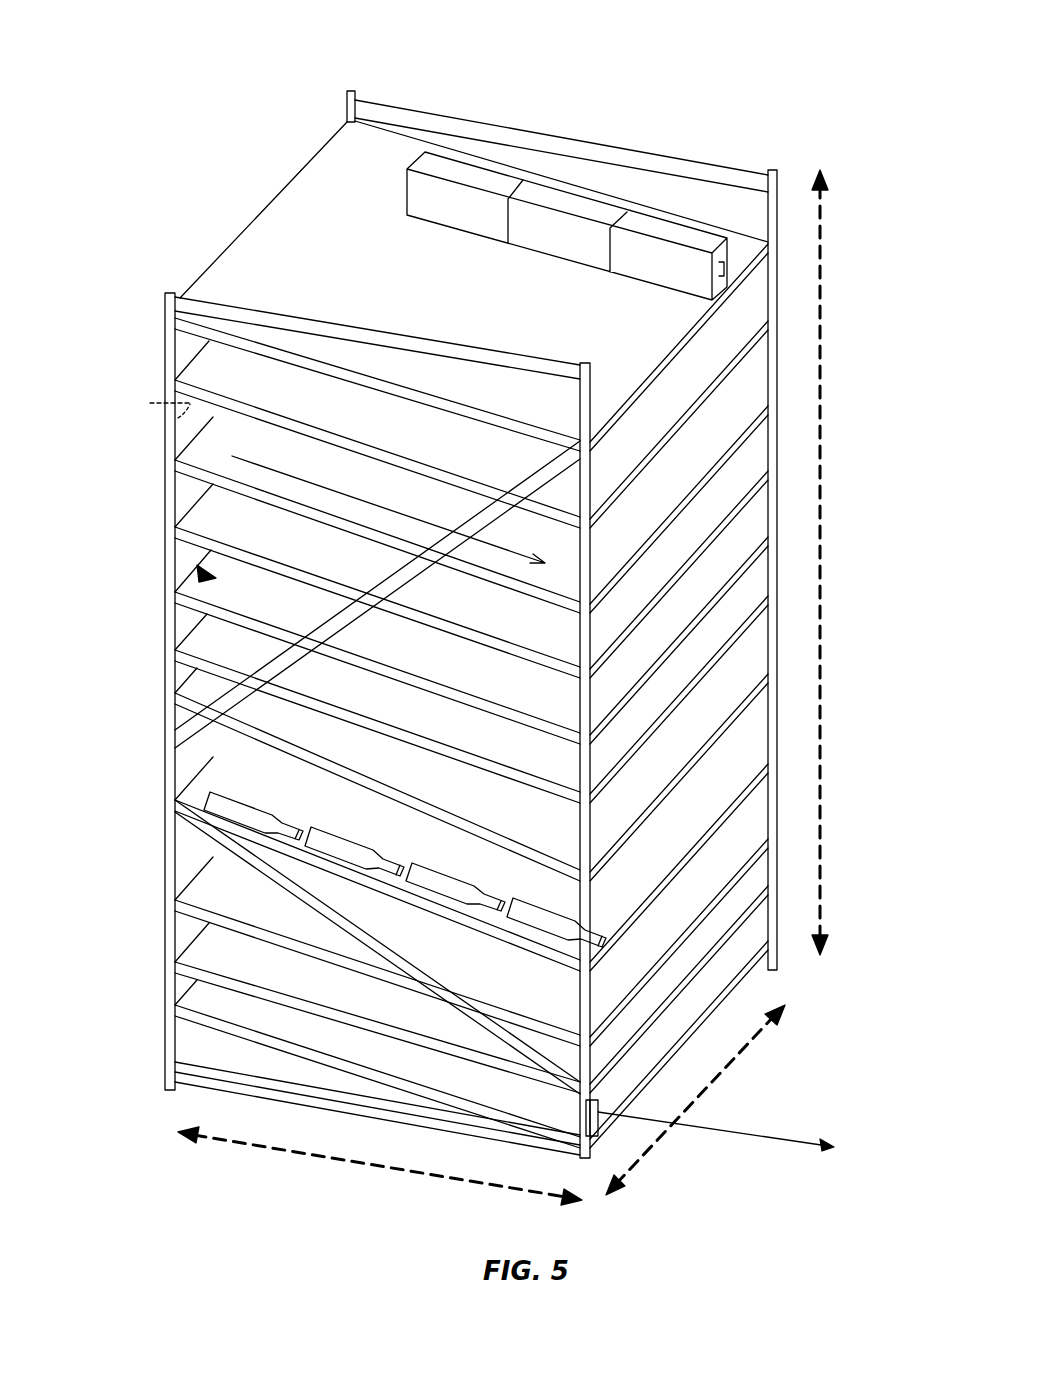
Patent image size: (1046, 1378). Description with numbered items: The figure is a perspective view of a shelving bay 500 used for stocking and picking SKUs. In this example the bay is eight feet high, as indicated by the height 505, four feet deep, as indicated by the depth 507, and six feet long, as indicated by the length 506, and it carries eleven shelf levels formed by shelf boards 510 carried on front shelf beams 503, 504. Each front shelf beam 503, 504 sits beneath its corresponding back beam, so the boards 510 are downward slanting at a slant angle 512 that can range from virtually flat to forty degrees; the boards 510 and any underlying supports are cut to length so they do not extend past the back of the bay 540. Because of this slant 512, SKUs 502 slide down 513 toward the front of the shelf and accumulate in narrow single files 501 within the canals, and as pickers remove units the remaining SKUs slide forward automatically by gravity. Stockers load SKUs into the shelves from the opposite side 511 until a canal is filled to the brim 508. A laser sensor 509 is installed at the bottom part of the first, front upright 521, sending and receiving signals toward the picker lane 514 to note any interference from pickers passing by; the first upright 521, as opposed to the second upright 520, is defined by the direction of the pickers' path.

The shelving bay 500 is at (510, 658).
The single file of SKUs 501 is at (680, 265).
The SKUs 502 is at (330, 853).
The front shelf beam 503 is at (725, 655).
The front shelf beam 504 is at (725, 385).
The bay height 505 is at (828, 455).
The bay length 506 is at (730, 1075).
The bay depth 507 is at (390, 1178).
The brim of the canal 508 is at (215, 806).
The laser sensor 509 is at (605, 1122).
The shelf board 510 is at (725, 420).
The shelf loading side 511 is at (200, 574).
The slant angle 512 is at (180, 402).
The slide-down direction 513 is at (255, 472).
The picker lane 514 is at (740, 1138).
The second upright 520 is at (780, 722).
The first upright 521 is at (575, 393).
The back of the bay 540 is at (185, 641).